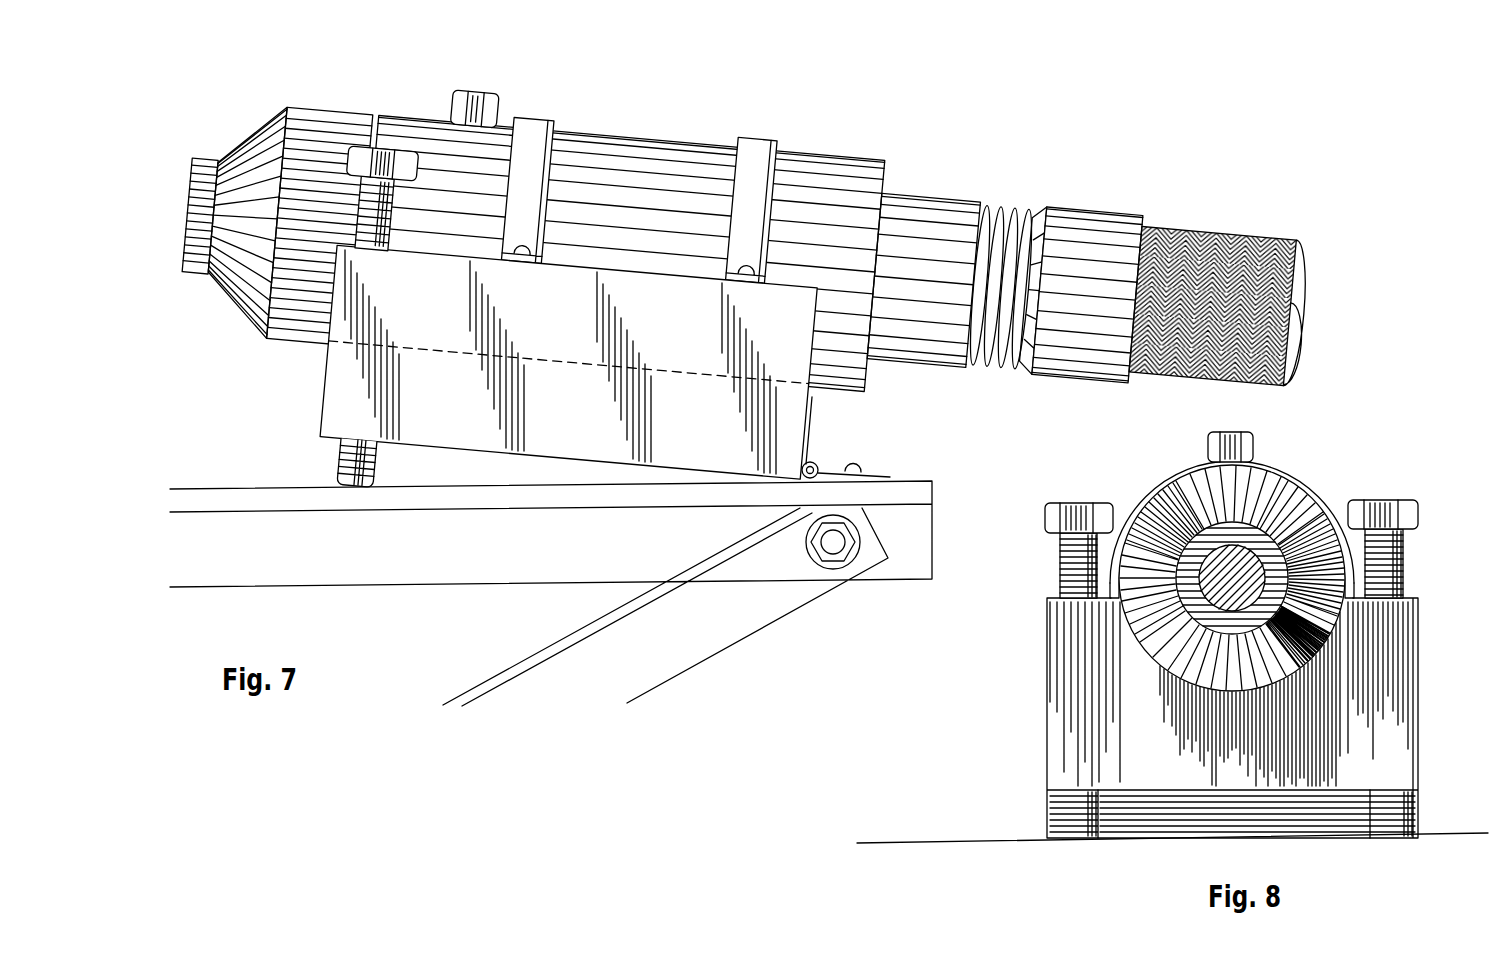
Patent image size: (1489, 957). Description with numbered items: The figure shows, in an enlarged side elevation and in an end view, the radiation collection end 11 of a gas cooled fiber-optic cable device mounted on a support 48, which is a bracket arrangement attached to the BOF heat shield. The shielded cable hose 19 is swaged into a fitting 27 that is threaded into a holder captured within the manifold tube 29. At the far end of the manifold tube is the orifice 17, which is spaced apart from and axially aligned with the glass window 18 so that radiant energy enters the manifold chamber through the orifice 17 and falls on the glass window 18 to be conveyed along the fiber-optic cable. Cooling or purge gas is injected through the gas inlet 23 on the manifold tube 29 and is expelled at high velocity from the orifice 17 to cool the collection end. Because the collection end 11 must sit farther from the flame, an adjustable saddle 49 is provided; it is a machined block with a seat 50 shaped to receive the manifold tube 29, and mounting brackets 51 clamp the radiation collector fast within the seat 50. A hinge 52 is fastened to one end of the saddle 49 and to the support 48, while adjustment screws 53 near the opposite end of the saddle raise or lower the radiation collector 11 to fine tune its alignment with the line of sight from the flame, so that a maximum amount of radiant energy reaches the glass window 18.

In FIG. 7, the radiation collection end 11 is at (1062, 147).
In FIG. 8, the radiation collection end 11 is at (1343, 474).
In FIG. 7, the orifice 17 is at (193, 203).
In FIG. 8, the orifice 17 is at (1254, 534).
In FIG. 8, the glass window 18 is at (1175, 637).
In FIG. 7, the shielded cable hose 19 is at (1238, 237).
In FIG. 8, the gas inlet 23 is at (1208, 450).
In FIG. 7, the fitting 27 is at (1077, 218).
In FIG. 7, the manifold tube 29 is at (635, 177).
In FIG. 7, the support 48 is at (448, 571).
In FIG. 8, the support 48 is at (970, 842).
In FIG. 7, the adjustable saddle 49 is at (582, 408).
In FIG. 8, the adjustable saddle 49 is at (1378, 723).
In FIG. 7, the seat 50 is at (417, 349).
In FIG. 8, the seat 50 is at (1121, 628).
In FIG. 7, the mounting brackets 51 is at (528, 154).
In FIG. 8, the mounting brackets 51 is at (1148, 492).
In FIG. 7, the hinge 52 is at (818, 462).
In FIG. 7, the adjustment screws 53 is at (363, 150).
In FIG. 8, the adjustment screws 53 is at (1060, 572).